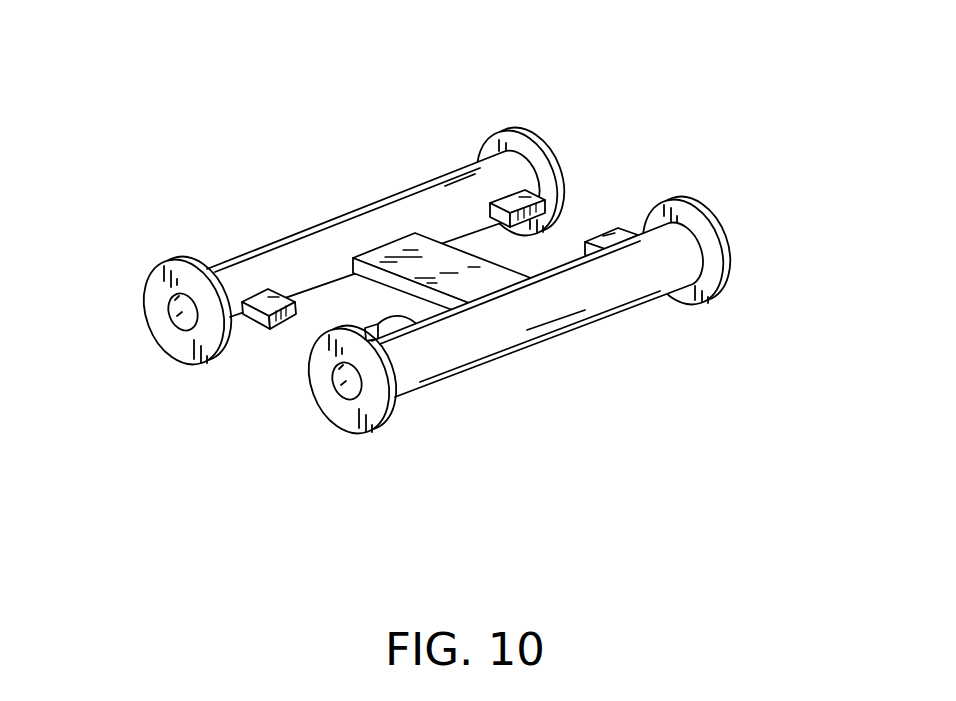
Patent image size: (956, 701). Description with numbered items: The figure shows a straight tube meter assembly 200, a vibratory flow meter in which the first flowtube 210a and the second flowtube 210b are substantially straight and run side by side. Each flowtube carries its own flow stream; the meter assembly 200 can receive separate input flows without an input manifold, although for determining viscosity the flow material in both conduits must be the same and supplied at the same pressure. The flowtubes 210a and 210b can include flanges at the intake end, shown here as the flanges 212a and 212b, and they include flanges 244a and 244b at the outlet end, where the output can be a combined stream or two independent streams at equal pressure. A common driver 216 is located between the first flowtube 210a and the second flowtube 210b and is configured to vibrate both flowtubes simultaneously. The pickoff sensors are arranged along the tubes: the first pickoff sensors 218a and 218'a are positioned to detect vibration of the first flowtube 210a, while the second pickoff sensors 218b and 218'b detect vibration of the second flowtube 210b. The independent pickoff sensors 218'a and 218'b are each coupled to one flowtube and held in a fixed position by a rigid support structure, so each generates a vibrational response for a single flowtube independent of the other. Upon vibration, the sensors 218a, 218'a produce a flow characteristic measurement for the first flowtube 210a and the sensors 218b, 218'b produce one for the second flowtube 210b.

The meter assembly 200 is at (442, 258).
The first flowtube 210a is at (557, 333).
The second flowtube 210b is at (360, 213).
The first end flange 212a is at (380, 434).
The second end flange 212b is at (197, 367).
The flange 244a is at (729, 263).
The flange 244b is at (519, 133).
The common driver 216 is at (493, 264).
The first pickoff sensor 218a is at (423, 333).
The second pickoff sensor 218b is at (267, 290).
The first independent pickoff sensor 218'a is at (647, 301).
The second independent pickoff sensor 218'b is at (471, 163).